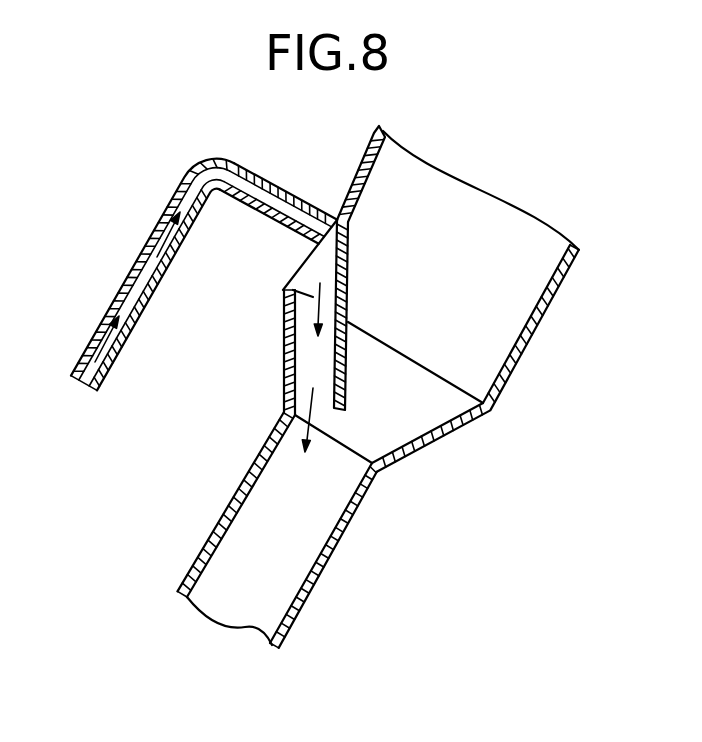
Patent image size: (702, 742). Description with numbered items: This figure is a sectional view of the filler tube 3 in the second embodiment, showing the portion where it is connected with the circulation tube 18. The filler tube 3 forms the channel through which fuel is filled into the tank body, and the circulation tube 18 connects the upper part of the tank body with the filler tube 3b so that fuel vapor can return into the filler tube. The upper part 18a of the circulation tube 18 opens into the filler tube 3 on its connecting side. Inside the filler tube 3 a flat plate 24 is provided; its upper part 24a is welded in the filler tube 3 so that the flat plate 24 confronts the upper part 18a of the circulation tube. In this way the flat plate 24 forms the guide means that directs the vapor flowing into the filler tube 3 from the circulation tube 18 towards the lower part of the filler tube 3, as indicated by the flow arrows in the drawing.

The filler tube 3 is at (345, 563).
The filler tube 3b is at (536, 333).
The circulation tube 18 is at (148, 244).
The upper part of the circulation tube 18a is at (276, 186).
The flat plate 24 is at (350, 264).
The upper part of the flat plate 24a is at (372, 176).